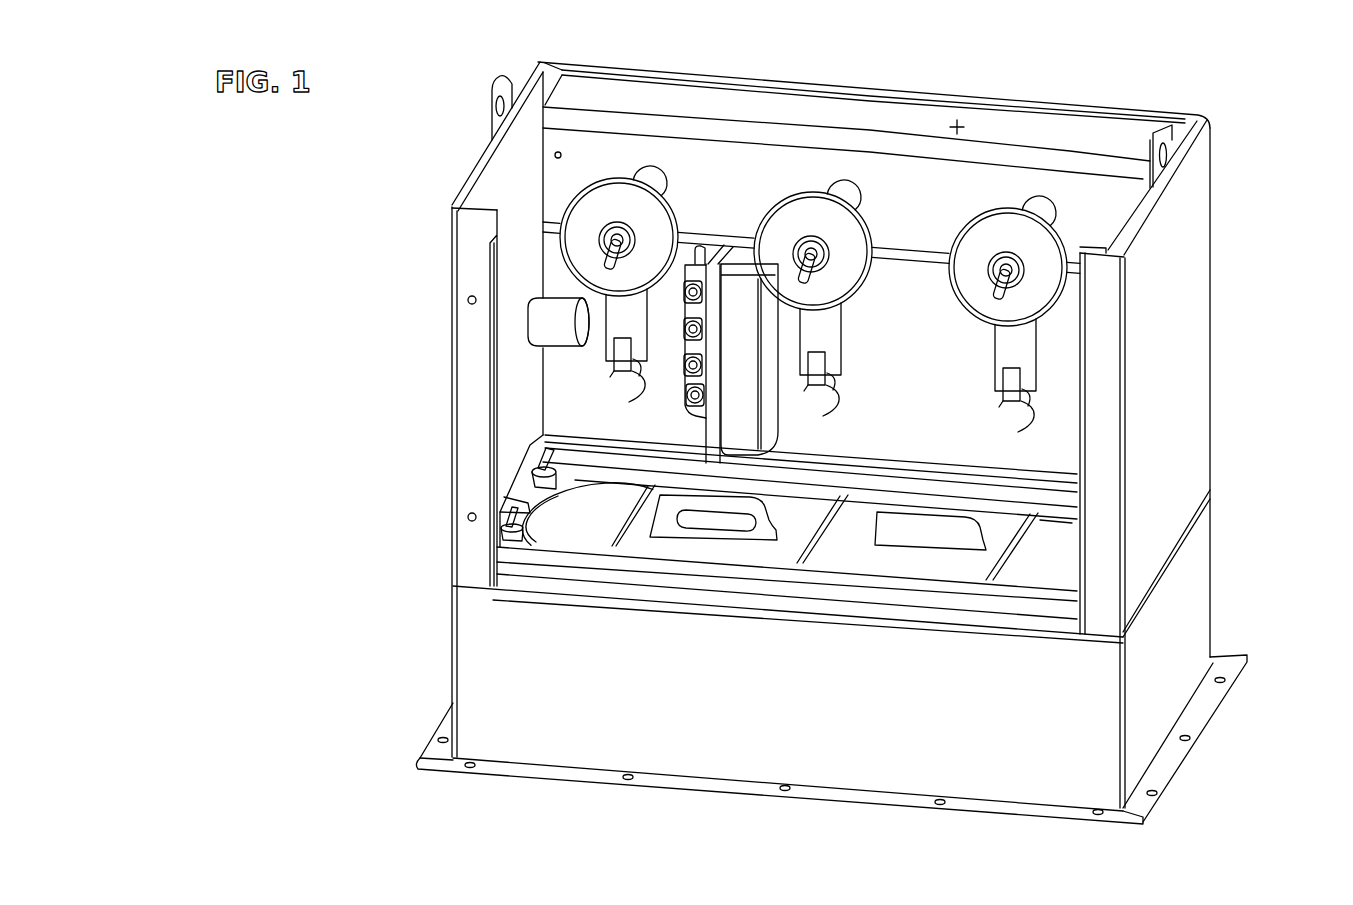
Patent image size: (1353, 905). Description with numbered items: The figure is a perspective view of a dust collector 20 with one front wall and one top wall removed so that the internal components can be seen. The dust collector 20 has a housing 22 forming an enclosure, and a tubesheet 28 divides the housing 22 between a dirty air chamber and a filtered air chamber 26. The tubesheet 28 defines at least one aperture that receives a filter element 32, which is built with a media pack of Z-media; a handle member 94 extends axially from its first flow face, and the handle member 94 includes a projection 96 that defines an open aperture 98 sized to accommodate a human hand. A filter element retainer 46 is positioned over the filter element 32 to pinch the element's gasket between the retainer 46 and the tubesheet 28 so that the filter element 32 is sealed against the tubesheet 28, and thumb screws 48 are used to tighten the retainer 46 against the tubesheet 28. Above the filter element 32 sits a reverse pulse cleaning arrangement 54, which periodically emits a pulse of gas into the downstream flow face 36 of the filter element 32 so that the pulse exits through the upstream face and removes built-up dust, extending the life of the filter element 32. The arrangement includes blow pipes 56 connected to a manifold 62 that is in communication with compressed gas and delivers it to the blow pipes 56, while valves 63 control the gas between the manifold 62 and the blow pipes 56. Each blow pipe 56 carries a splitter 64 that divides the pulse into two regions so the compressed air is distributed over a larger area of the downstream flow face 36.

The dust collector 20 is at (1296, 163).
The housing 22 is at (1192, 352).
The filtered air chamber 26 is at (497, 374).
The tubesheet 28 is at (703, 598).
The filter element 32 is at (597, 528).
The downstream flow face 36 is at (787, 541).
The filter element retainer 46 is at (523, 498).
The thumb screws 48 is at (527, 477).
The reverse pulse cleaning arrangement 54 is at (753, 110).
The blow pipes 56 is at (630, 315).
The manifold 62 is at (585, 155).
The valves 63 is at (647, 217).
The splitter 64 is at (831, 412).
The handle member 94 is at (634, 523).
The projection 96 is at (723, 500).
The open aperture 98 is at (747, 527).